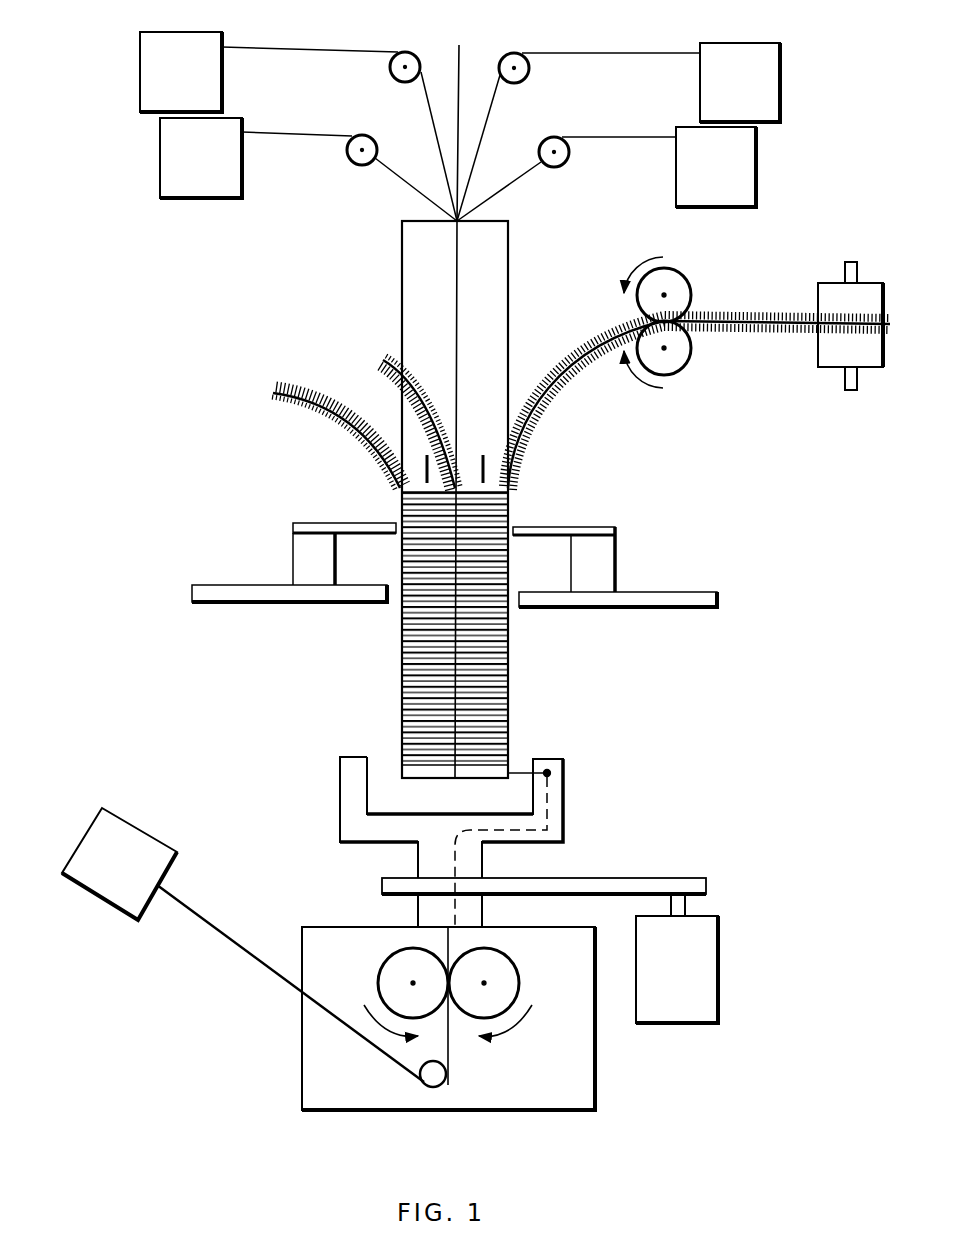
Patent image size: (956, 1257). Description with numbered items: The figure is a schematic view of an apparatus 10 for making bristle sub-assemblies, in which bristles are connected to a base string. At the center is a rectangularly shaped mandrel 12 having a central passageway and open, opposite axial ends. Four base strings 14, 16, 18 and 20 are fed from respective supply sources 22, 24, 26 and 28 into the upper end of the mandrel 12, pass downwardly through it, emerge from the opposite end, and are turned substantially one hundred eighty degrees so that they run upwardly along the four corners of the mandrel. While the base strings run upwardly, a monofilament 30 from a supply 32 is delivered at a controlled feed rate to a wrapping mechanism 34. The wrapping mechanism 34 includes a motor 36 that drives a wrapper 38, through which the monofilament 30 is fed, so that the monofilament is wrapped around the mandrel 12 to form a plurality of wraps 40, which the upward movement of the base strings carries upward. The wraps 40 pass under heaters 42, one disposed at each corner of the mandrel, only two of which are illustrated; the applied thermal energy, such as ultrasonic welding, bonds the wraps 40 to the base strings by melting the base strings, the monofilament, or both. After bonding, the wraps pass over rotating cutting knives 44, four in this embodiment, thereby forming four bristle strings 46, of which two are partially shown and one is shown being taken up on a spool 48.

The apparatus 10 is at (205, 417).
The mandrel 12 is at (428, 278).
The base string 14 is at (318, 45).
The base string 16 is at (315, 130).
The base string 18 is at (585, 48).
The base string 20 is at (600, 135).
The supply source 22 is at (140, 48).
The supply source 24 is at (160, 150).
The supply source 26 is at (780, 70).
The supply source 28 is at (756, 164).
The monofilament 30 is at (200, 917).
The supply 32 is at (120, 812).
The wrapping mechanism 34 is at (612, 815).
The motor 36 is at (718, 985).
The wrapper 38 is at (340, 812).
The wraps 40 is at (365, 676).
The heaters 42 is at (305, 524).
The rotating cutting knives 44 is at (487, 470).
The bristle strings 46 is at (571, 388).
The spool 48 is at (835, 368).